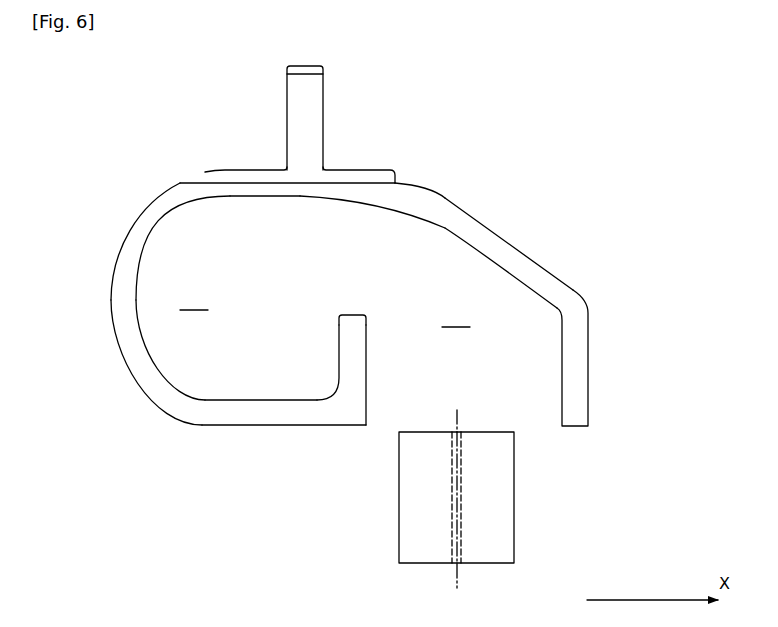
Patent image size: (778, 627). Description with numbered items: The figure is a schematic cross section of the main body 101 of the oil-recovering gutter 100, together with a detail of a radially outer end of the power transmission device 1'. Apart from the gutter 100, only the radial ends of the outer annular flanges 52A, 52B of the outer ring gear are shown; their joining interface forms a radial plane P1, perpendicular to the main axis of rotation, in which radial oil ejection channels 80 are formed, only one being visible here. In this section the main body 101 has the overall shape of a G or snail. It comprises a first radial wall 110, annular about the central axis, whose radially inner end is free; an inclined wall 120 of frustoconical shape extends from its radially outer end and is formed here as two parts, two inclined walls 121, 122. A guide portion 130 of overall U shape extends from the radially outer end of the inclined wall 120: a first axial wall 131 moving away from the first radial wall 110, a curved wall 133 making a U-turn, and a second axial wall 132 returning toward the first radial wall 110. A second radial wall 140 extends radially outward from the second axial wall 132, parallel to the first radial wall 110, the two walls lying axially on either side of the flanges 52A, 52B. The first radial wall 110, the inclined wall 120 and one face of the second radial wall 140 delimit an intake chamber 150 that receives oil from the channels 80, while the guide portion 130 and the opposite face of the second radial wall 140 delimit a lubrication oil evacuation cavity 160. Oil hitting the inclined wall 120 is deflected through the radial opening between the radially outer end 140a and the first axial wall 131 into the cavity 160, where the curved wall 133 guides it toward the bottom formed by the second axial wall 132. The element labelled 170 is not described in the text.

The gutter 100 is at (564, 163).
The main body 101 is at (143, 192).
The first radial wall 110 is at (578, 353).
The inclined wall 120 is at (489, 185).
The inclined wall 121 is at (511, 258).
The inclined wall 122 is at (418, 200).
The guide portion 130 is at (148, 397).
The first axial wall 131 is at (273, 190).
The second axial wall 132 is at (275, 412).
The curved wall 133 is at (123, 303).
The second radial wall 140 is at (355, 340).
The radially outer end of the second radial wall 140a is at (353, 308).
The intake chamber 150 is at (457, 317).
The lubrication oil evacuation cavity 160 is at (195, 300).
The projection 170 is at (314, 118).
The power transmission device 1' is at (716, 111).
The outer annular flange 52A is at (422, 488).
The outer annular flange 52B is at (490, 489).
The radial oil ejection channel 80 is at (452, 485).
The radial plane P1 is at (455, 570).